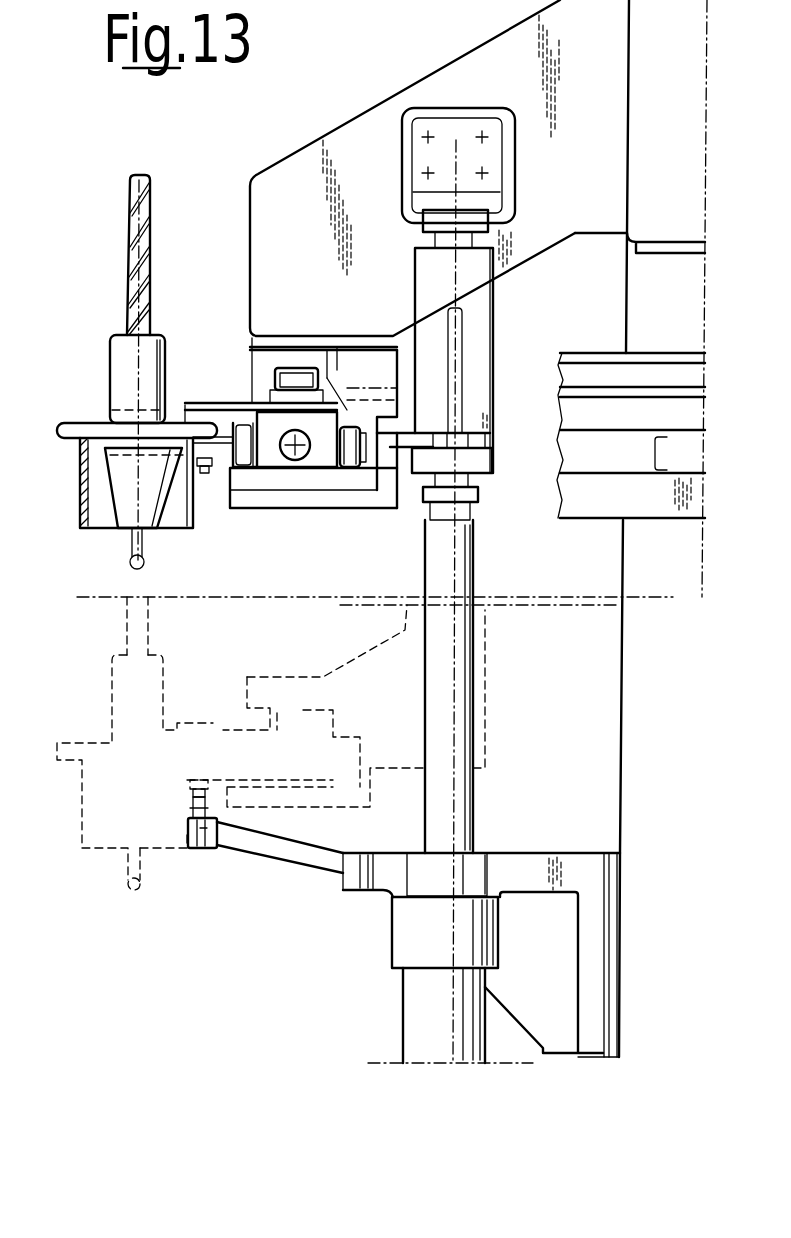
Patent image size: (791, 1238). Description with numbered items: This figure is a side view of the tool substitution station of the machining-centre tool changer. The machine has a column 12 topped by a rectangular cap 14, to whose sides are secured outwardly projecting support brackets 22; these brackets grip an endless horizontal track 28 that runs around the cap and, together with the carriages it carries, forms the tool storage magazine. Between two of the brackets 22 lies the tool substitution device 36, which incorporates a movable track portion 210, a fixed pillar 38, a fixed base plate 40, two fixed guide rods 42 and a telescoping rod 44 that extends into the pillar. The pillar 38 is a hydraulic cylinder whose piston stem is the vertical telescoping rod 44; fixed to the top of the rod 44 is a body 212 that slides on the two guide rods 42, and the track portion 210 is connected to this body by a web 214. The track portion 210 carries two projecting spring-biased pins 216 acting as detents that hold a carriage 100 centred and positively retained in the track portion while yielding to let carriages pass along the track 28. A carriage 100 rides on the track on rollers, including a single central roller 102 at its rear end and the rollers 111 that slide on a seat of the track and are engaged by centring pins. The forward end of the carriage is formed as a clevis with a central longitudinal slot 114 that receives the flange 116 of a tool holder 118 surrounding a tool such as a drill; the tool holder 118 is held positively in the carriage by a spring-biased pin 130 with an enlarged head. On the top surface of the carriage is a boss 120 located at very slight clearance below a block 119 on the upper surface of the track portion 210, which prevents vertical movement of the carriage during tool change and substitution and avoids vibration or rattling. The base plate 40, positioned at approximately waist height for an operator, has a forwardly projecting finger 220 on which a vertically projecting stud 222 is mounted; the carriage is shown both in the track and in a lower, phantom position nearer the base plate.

The column 12 is at (640, 772).
The cap 14 is at (650, 52).
The support bracket 22 is at (274, 176).
The track 28 is at (623, 519).
The tool substitution device 36 is at (236, 246).
The fixed pillar 38 is at (423, 1015).
The base plate 40 is at (540, 900).
The fixed guide rods 42 is at (436, 241).
The telescoping rod 44 is at (470, 544).
The carriage 100 is at (233, 404).
The central roller 102 is at (386, 375).
The rollers 111 is at (273, 398).
The central longitudinal slot 114 is at (173, 420).
The flange 116 is at (73, 422).
The tool holder 118 is at (106, 365).
The block 119 is at (253, 408).
The boss 120 is at (257, 409).
The pin 130 is at (207, 473).
The movable track portion 210 is at (307, 482).
The body 212 is at (477, 322).
The web 214 is at (400, 450).
The spring-biased pins 216 is at (397, 369).
The finger 220 is at (286, 850).
The stud 222 is at (193, 810).